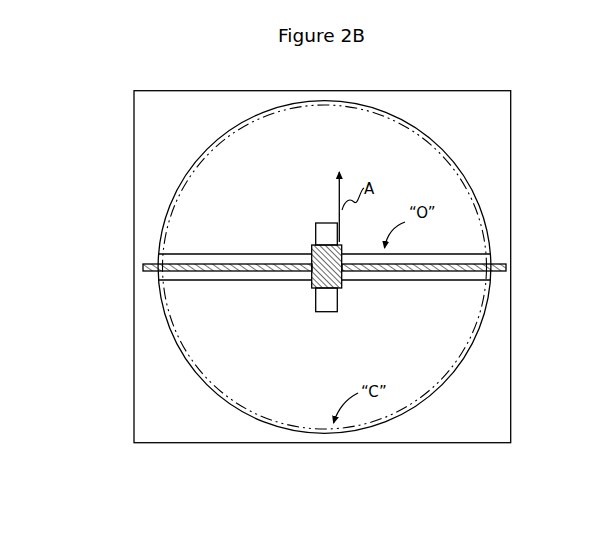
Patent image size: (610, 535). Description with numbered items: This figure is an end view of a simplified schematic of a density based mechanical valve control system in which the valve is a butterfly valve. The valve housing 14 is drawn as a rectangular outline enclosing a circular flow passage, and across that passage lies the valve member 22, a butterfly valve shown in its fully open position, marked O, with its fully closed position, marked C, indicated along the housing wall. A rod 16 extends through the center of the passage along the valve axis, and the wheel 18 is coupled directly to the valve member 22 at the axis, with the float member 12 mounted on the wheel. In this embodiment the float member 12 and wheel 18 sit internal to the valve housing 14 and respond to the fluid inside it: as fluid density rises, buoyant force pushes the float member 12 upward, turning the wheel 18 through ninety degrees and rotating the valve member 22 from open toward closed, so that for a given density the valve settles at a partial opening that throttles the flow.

The float member 12 is at (312, 262).
The valve housing 14 is at (133, 313).
The rod 16 is at (497, 270).
The wheel 18 is at (318, 223).
The valve member 22 is at (462, 260).